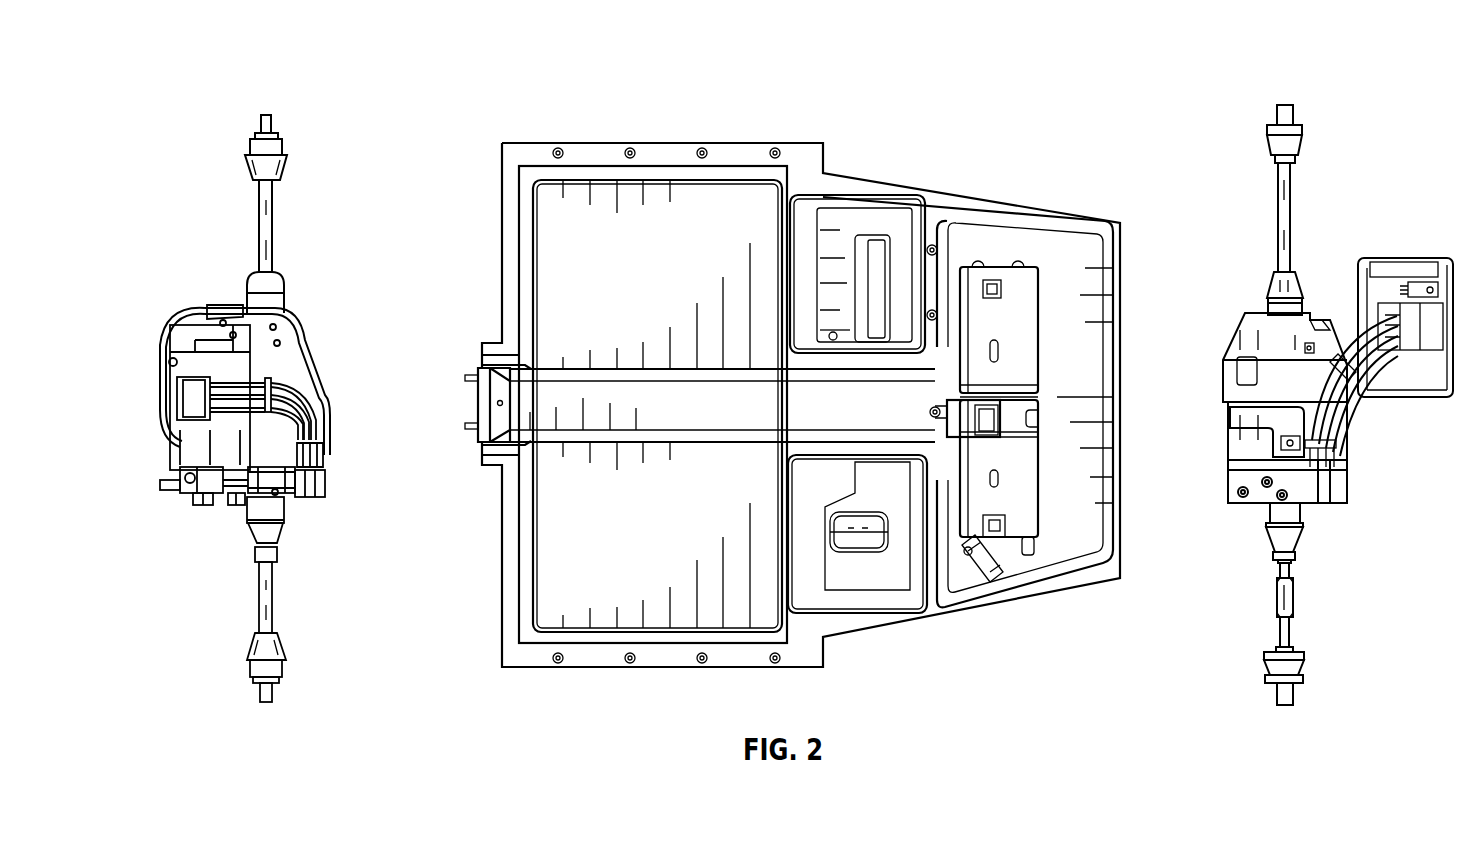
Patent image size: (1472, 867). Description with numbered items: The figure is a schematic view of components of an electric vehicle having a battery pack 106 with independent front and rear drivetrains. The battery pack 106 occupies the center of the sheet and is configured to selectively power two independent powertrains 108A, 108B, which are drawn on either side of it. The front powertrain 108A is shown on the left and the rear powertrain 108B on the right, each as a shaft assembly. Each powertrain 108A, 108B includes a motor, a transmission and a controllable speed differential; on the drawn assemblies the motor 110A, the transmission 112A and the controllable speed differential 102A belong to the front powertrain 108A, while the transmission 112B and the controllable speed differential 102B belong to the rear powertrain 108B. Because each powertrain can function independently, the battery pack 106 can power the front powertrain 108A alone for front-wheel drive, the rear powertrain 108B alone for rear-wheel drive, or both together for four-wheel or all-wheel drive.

The battery pack 106 is at (683, 222).
The front powertrain 108A is at (330, 75).
The rear powertrain 108B is at (1178, 68).
The controllable speed differential 102A is at (283, 335).
The controllable speed differential 102B is at (1283, 330).
The transmission 112A is at (290, 378).
The transmission 112B is at (1237, 397).
The motor 110A is at (180, 443).